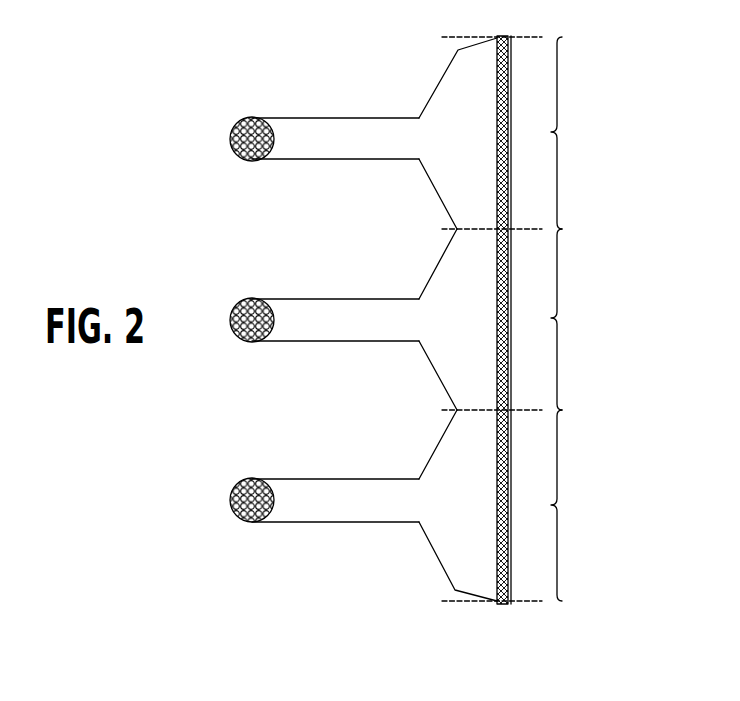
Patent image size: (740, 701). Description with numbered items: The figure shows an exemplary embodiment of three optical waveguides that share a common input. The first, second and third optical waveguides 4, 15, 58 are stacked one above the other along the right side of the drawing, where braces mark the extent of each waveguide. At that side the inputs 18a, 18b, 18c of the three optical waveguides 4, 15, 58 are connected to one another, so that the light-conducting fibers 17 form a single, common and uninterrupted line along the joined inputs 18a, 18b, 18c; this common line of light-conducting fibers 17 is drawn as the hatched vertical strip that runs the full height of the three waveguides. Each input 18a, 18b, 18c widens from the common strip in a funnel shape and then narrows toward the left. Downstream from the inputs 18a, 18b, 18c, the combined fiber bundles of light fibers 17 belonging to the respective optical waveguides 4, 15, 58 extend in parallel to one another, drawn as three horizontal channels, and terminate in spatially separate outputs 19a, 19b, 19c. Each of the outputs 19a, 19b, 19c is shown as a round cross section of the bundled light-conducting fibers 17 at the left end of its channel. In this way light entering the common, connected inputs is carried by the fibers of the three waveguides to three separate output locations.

The light-conducting fibers 17 is at (250, 118).
The input of first optical waveguide 18a is at (453, 78).
The input of second optical waveguide 18b is at (453, 260).
The input of third optical waveguide 18c is at (453, 448).
The output of first optical waveguide 19a is at (238, 162).
The output of second optical waveguide 19b is at (238, 343).
The output of third optical waveguide 19c is at (238, 524).
The first optical waveguide 4 is at (566, 132).
The second optical waveguide 15 is at (566, 318).
The third optical waveguide 58 is at (566, 505).